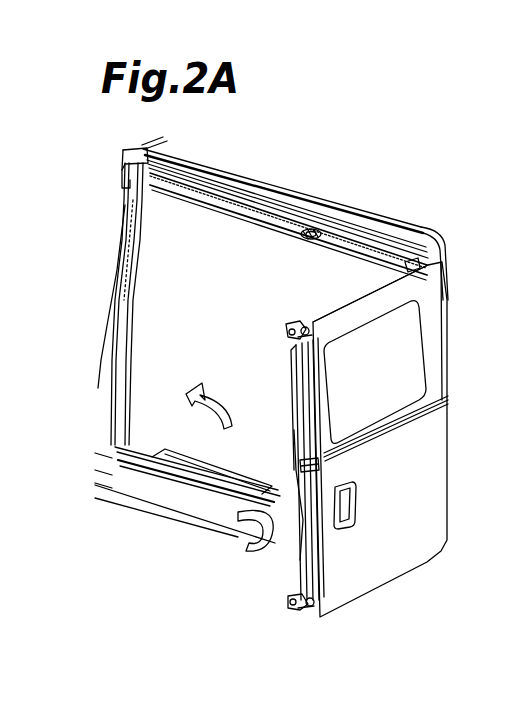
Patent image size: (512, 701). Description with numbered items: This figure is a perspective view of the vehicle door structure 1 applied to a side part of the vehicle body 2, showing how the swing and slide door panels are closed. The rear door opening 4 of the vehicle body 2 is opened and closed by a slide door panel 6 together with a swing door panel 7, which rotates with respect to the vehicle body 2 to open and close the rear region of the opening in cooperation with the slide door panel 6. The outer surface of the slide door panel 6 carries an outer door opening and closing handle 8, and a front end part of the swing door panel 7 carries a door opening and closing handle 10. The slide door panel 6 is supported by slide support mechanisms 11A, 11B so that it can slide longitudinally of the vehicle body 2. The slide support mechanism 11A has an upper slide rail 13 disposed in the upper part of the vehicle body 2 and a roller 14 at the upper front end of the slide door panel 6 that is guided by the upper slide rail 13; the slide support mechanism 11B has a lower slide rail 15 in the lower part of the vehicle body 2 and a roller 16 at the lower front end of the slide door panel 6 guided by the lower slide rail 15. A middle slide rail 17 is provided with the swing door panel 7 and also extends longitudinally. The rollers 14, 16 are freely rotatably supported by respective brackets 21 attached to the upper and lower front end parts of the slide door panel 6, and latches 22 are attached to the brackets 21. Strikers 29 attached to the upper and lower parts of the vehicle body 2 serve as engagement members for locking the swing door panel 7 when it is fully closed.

The vehicle door structure 1 is at (369, 285).
The vehicle body 2 is at (400, 232).
The rear door opening 4 is at (150, 275).
The slide door panel 6 is at (430, 300).
The swing door panel 7 is at (298, 392).
The outer door opening and closing handle 8 is at (352, 505).
The door opening and closing handle 10 is at (293, 470).
The slide support mechanism 11A is at (280, 205).
The slide support mechanism 11B is at (224, 494).
The upper slide rail 13 is at (208, 198).
The roller 14 is at (290, 329).
The lower slide rail 15 is at (163, 462).
The roller 16 is at (290, 599).
The middle slide rail 17 is at (297, 445).
The bracket 21 is at (288, 338).
The latch 22 is at (300, 324).
The striker 29 is at (320, 231).